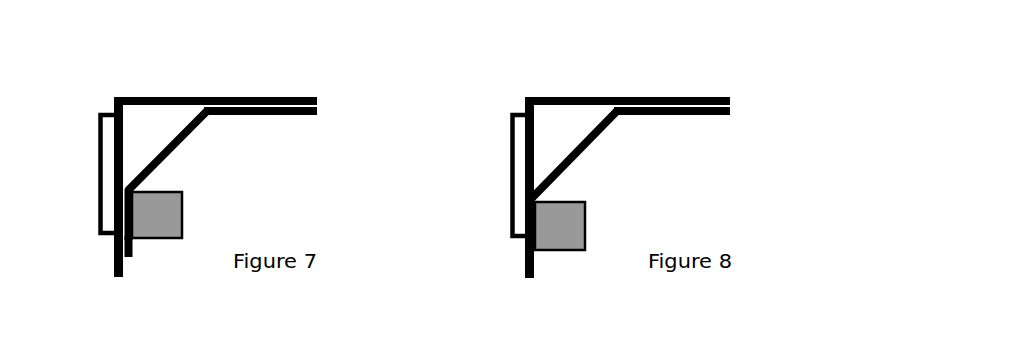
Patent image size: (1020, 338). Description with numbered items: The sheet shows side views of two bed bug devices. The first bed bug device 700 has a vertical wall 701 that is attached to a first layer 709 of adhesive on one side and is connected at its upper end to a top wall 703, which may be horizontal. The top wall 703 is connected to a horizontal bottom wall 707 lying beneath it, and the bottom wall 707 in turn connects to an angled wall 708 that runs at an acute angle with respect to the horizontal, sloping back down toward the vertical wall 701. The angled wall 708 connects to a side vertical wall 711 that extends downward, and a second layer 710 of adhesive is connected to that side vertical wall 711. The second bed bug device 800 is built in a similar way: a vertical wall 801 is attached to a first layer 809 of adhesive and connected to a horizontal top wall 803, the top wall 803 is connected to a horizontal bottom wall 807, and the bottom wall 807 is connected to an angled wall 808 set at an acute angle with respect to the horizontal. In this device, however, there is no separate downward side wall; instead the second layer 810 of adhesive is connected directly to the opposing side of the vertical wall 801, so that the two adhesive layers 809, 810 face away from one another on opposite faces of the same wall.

In FIG. 7, the bed bug device 700 is at (175, 164).
In FIG. 7, the vertical wall 701 is at (114, 252).
In FIG. 7, the top wall 703 is at (252, 98).
In FIG. 7, the horizontal bottom wall 707 is at (267, 115).
In FIG. 7, the angled wall 708 is at (182, 140).
In FIG. 7, the first layer of adhesive 709 is at (93, 172).
In FIG. 7, the second layer of adhesive 710 is at (178, 212).
In FIG. 7, the side vertical wall 711 is at (135, 247).
In FIG. 8, the bed bug device 800 is at (590, 164).
In FIG. 8, the vertical wall 801 is at (525, 253).
In FIG. 8, the top wall 803 is at (678, 98).
In FIG. 8, the horizontal bottom wall 807 is at (682, 115).
In FIG. 8, the angled wall 808 is at (593, 140).
In FIG. 8, the first layer of adhesive 809 is at (509, 173).
In FIG. 8, the second layer of adhesive 810 is at (553, 242).